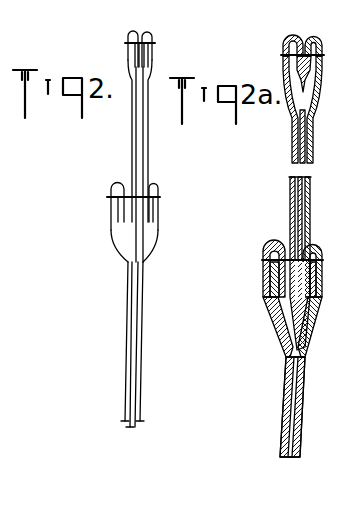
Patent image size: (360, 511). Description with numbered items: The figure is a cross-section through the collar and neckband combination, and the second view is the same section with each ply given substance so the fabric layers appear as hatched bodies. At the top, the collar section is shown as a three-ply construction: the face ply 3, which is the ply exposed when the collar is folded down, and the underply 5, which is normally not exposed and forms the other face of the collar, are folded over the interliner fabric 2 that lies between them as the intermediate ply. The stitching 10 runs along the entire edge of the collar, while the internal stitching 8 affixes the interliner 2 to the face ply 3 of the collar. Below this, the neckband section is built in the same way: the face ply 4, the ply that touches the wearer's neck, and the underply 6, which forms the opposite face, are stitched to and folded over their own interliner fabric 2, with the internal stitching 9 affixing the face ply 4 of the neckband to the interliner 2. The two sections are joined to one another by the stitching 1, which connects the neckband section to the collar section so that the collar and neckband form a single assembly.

In FIG. 2, the stitching 1 is at (160, 198).
In FIG. 2A, the stitching 1 is at (323, 258).
In FIG. 2, the interliner fabric 2 is at (137, 132).
In FIG. 2A, the interliner fabric 2 is at (303, 153).
In FIG. 2, the face ply 3 is at (117, 70).
In FIG. 2A, the face ply 3 is at (292, 187).
In FIG. 2, the face ply 4 is at (118, 249).
In FIG. 2A, the face ply 4 is at (282, 318).
In FIG. 2, the underply 5 is at (149, 142).
In FIG. 2A, the underply 5 is at (313, 130).
In FIG. 2, the underply 6 is at (153, 230).
In FIG. 2A, the underply 6 is at (313, 323).
In FIG. 2, the internal stitching 8 is at (152, 57).
In FIG. 2A, the internal stitching 8 is at (313, 75).
In FIG. 2, the internal stitching 9 is at (128, 213).
In FIG. 2A, the internal stitching 9 is at (282, 283).
In FIG. 2, the stitching 10 is at (153, 42).
In FIG. 2A, the stitching 10 is at (318, 57).